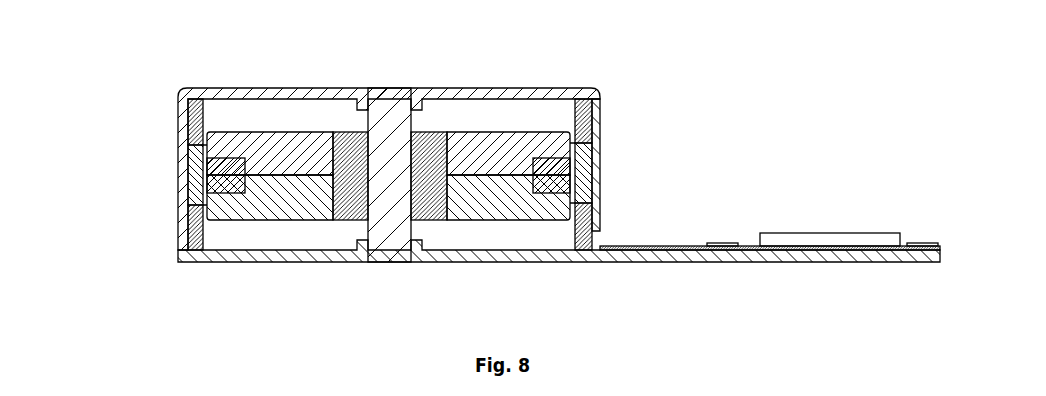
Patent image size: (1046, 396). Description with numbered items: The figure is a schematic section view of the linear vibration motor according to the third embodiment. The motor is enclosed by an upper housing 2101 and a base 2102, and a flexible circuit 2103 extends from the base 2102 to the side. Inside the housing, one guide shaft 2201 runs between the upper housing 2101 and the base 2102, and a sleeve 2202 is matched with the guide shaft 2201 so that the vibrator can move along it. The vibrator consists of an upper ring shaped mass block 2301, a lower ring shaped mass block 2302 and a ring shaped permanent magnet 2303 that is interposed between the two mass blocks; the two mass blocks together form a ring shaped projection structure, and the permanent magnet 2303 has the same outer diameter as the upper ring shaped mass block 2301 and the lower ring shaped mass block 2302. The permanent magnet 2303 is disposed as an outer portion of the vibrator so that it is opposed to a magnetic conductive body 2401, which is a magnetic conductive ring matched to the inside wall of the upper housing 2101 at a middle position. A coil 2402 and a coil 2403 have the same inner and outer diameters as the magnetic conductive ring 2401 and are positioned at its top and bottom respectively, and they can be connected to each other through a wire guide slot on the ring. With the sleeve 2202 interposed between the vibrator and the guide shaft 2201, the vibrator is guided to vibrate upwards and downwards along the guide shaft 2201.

The upper housing 2101 is at (310, 98).
The base 2102 is at (502, 262).
The flexible circuit 2103 is at (679, 250).
The guide shaft 2201 is at (368, 97).
The sleeve 2202 is at (432, 150).
The upper ring shaped mass block 2301 is at (510, 142).
The lower ring shaped mass block 2302 is at (287, 195).
The ring shaped permanent magnet 2303 is at (553, 175).
The magnetic conductive body 2401 is at (193, 170).
The coil 2402 is at (194, 119).
The coil 2403 is at (193, 228).